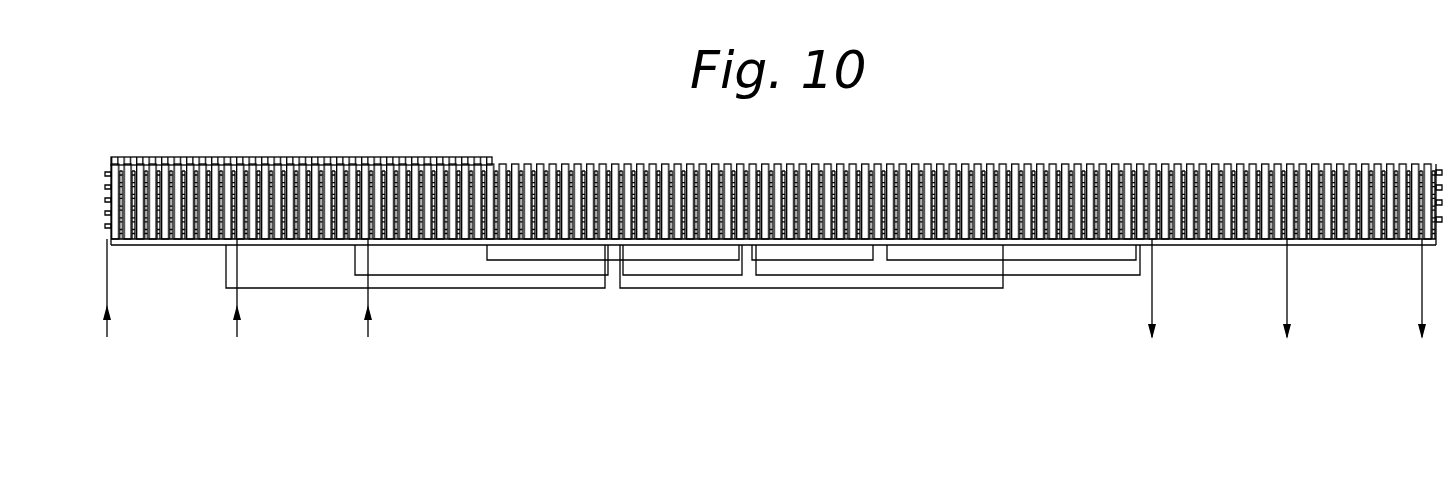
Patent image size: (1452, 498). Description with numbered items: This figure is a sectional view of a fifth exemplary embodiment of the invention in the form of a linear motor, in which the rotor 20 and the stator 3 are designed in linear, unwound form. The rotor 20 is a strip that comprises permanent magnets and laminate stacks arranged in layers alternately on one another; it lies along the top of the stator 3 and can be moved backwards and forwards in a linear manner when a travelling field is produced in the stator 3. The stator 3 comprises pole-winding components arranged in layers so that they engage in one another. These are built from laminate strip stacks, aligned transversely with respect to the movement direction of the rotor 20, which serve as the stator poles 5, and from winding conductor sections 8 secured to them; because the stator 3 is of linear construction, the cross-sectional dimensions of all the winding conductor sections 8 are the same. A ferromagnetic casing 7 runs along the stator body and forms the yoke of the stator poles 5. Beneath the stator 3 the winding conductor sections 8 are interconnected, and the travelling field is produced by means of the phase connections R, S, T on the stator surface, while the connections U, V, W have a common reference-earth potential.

The stator 3 is at (721, 296).
The stator poles 5 is at (987, 181).
The ferromagnetic casing 7 is at (429, 245).
The winding conductor sections 8 is at (1098, 174).
The rotor 20 is at (270, 156).
The phase connection R is at (107, 302).
The phase connection S is at (237, 302).
The phase connection T is at (368, 302).
The connection U is at (1152, 302).
The connection V is at (1287, 302).
The connection W is at (1422, 302).